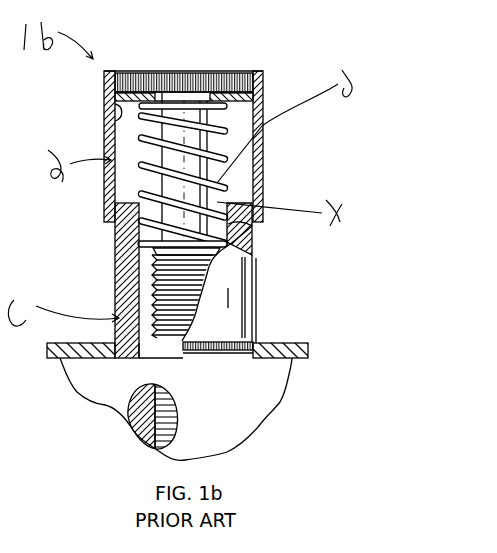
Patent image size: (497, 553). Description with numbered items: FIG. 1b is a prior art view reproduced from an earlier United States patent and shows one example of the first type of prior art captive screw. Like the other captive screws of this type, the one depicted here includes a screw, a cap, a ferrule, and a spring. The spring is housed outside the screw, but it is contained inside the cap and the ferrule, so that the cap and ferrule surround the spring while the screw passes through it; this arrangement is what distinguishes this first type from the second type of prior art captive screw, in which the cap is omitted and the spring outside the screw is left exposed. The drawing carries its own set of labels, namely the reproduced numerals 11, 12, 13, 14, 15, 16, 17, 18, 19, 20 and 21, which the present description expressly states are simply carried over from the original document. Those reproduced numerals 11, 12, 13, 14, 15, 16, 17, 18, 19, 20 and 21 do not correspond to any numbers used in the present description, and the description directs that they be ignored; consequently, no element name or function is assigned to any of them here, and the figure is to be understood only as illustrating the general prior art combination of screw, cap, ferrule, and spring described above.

The knurled cap top 11 is at (207, 73).
The cap housing wall 13 is at (263, 150).
The seal ring 16 is at (117, 113).
The plunger rod 21 is at (232, 132).
The coil spring 12 is at (222, 173).
The body 14 is at (122, 298).
The threaded shaft 18 is at (152, 262).
The sleeve 17 is at (243, 257).
The knurled ring 20 is at (250, 342).
The base plate 15 is at (295, 343).
The bone fragment 19 is at (248, 418).